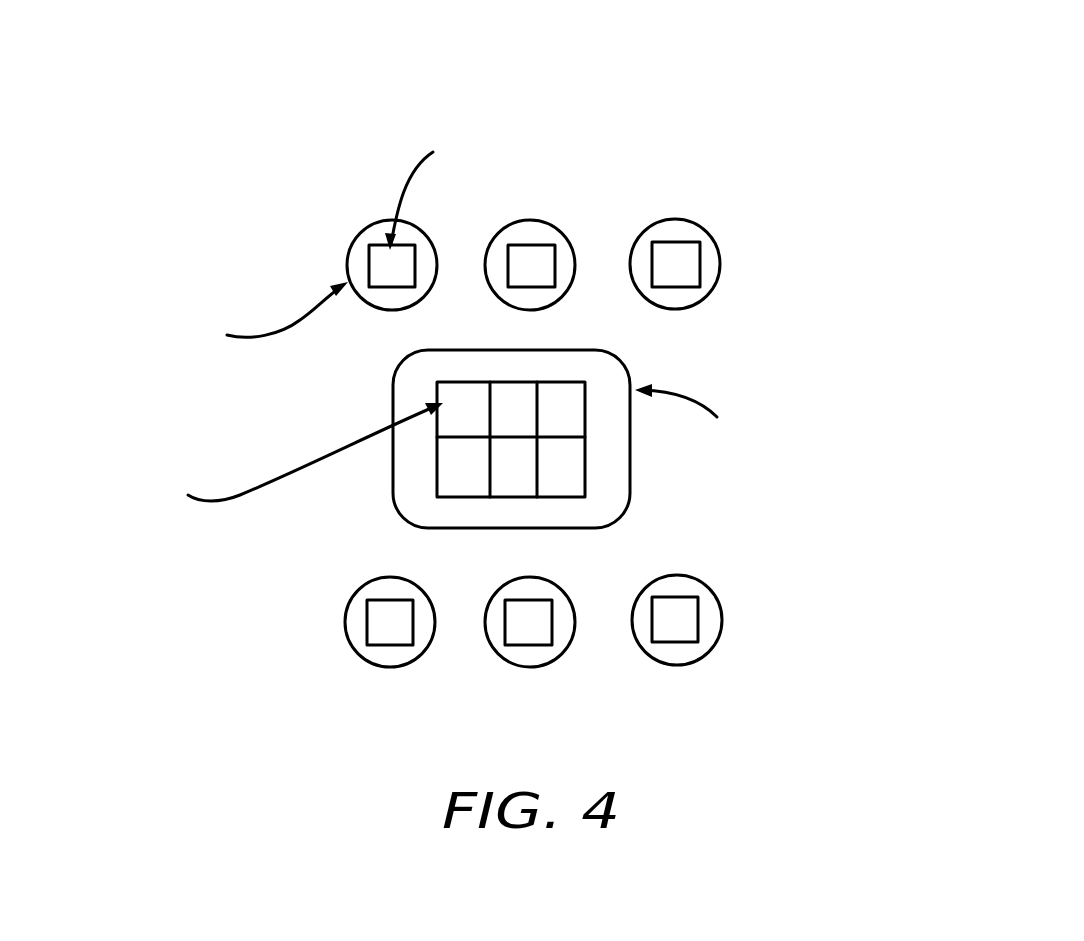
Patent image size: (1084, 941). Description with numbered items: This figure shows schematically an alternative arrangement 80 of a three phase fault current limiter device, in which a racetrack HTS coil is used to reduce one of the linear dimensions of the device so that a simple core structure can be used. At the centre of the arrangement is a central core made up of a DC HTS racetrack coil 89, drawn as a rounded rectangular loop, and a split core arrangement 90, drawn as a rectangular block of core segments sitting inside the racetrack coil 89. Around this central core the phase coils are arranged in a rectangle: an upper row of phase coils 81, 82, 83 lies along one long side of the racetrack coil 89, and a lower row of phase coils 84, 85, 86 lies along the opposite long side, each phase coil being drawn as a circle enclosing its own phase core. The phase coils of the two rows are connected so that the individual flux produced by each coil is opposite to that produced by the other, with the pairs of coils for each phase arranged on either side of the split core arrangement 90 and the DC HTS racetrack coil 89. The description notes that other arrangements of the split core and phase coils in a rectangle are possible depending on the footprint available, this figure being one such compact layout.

The synchronous machine stator section 80 is at (762, 106).
The phase coil 81 is at (437, 250).
The phase coil 82 is at (577, 253).
The phase coil 83 is at (708, 235).
The phase coil 84 is at (373, 665).
The phase coil 85 is at (545, 665).
The phase coil 86 is at (687, 662).
The DC HTS racetrack coil 89 is at (630, 510).
The split core arrangement 90 is at (437, 480).